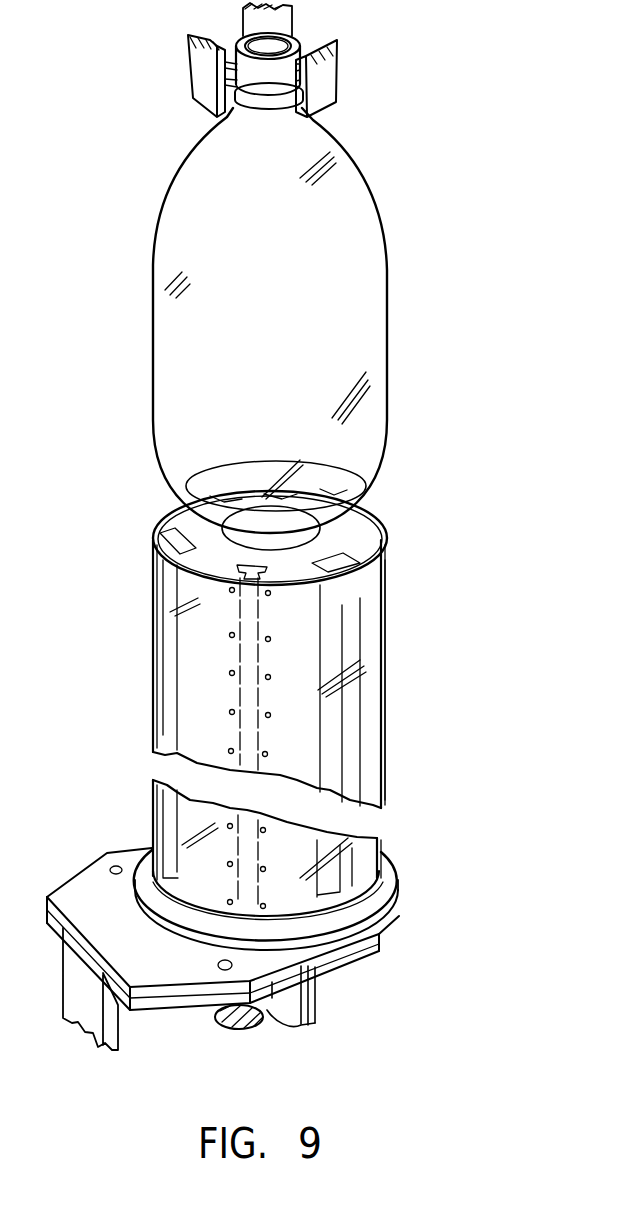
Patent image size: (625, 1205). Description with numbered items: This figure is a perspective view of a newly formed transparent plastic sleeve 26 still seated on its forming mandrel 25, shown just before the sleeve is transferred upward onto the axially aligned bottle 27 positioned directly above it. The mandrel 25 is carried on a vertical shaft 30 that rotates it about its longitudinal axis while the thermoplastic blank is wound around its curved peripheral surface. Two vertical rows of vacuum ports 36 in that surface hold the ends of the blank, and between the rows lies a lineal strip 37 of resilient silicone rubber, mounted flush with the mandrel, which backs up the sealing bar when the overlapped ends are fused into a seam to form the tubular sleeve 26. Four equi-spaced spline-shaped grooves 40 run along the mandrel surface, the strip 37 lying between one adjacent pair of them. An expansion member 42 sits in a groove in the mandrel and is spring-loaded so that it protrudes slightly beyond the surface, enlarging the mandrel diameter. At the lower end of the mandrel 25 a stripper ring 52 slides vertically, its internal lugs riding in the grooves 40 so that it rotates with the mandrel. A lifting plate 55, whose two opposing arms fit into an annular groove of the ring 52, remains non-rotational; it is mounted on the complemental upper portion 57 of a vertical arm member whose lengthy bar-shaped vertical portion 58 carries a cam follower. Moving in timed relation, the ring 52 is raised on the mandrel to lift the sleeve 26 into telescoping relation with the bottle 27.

The bottle 27 is at (387, 300).
The expansion member 42 is at (262, 497).
The tubular plastic sleeve 26 is at (390, 537).
The spline-shaped grooves 40 is at (173, 595).
The vacuum ports 36 is at (232, 672).
The lineal strip of resilient material 37 is at (247, 727).
The mandrel 25 is at (393, 738).
The stripper ring 52 is at (402, 887).
The lifting plate 55 is at (97, 878).
The upper portion 57 is at (167, 1010).
The bar-shaped vertical portion 58 is at (115, 1040).
The vertical shaft 30 is at (315, 1005).